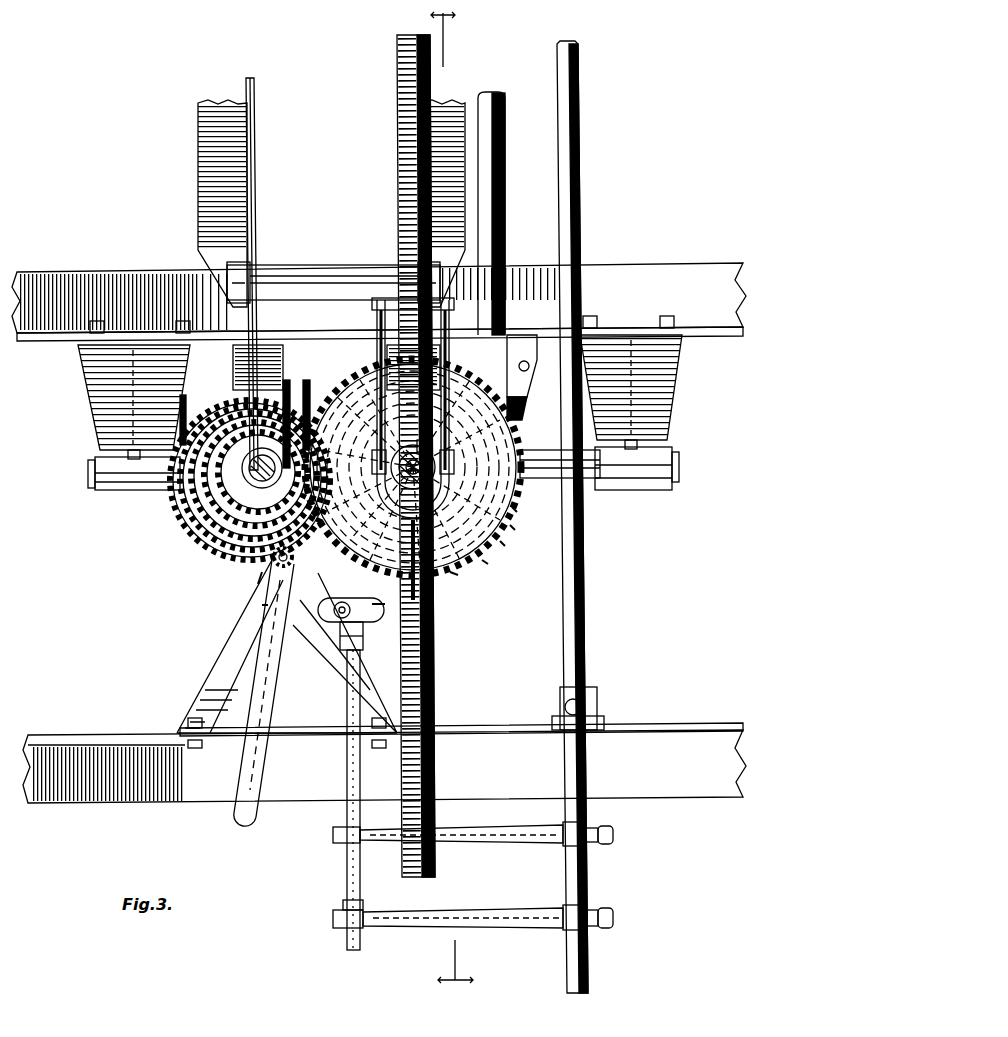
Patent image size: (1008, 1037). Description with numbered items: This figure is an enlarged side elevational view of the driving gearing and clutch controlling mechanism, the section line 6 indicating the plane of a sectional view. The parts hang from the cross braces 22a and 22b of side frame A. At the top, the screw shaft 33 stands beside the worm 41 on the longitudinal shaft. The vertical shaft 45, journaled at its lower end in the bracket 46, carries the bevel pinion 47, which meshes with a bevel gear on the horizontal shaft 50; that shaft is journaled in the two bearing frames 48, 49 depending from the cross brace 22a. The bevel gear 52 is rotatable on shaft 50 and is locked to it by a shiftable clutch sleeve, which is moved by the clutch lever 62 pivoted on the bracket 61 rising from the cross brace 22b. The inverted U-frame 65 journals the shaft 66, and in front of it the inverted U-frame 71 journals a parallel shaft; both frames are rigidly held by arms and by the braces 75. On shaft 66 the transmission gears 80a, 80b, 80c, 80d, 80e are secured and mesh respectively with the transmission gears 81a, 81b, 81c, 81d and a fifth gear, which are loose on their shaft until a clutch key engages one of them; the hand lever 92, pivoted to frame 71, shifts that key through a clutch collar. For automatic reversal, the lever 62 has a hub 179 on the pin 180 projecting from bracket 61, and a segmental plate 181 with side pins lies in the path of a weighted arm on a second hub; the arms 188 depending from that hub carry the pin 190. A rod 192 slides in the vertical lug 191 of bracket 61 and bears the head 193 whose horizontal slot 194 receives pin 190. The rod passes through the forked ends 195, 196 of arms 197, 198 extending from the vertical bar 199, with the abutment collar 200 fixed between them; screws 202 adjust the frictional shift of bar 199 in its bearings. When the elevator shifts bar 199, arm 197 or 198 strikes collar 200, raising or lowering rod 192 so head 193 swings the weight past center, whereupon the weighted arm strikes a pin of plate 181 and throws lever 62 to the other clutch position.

The section line 6- 6 is at (452, 505).
The cross brace 22a is at (665, 273).
The cross brace 22b is at (686, 735).
The screw shaft 33 is at (397, 64).
The worm 41 is at (427, 429).
The vertical shaft 45 is at (506, 196).
The bracket 46 is at (515, 340).
The bevel pinion 47 is at (504, 428).
The bearing frame 48 is at (100, 411).
The bearing frame 49 is at (668, 406).
The horizontal shaft 50 is at (549, 480).
The bevel gear 52 is at (203, 418).
The bracket 61 is at (260, 620).
The clutch lever 62 is at (267, 663).
The inverted U-frame 65 is at (235, 354).
The shaft 66 is at (240, 417).
The inverted U-frame 71 is at (400, 400).
The brace 75 is at (450, 104).
The transmission gear 80a is at (238, 545).
The transmission gear 80b is at (228, 535).
The transmission gear 80c is at (217, 520).
The transmission gear 80d is at (197, 513).
The transmission gear 80e is at (193, 500).
The transmission gear 81a is at (452, 576).
The transmission gear 81b is at (482, 562).
The transmission gear 81c is at (514, 508).
The transmission gear 81d is at (511, 526).
The hand lever 92 is at (440, 645).
The hub 179 is at (262, 572).
The pin 180 is at (262, 609).
The segmental plate 181 is at (395, 541).
The arm 188 is at (327, 597).
The pin 190 is at (274, 693).
The vertical lug 191 is at (436, 694).
The rod 192 is at (360, 773).
The head 193 is at (362, 628).
The horizontal slot 194 is at (385, 607).
The forked end 195 is at (337, 840).
The forked end 196 is at (333, 918).
The arm 197 is at (493, 828).
The arm 198 is at (537, 926).
The vertical bar 199 is at (588, 882).
The abutment collar 200 is at (365, 907).
The screw 202 is at (592, 705).